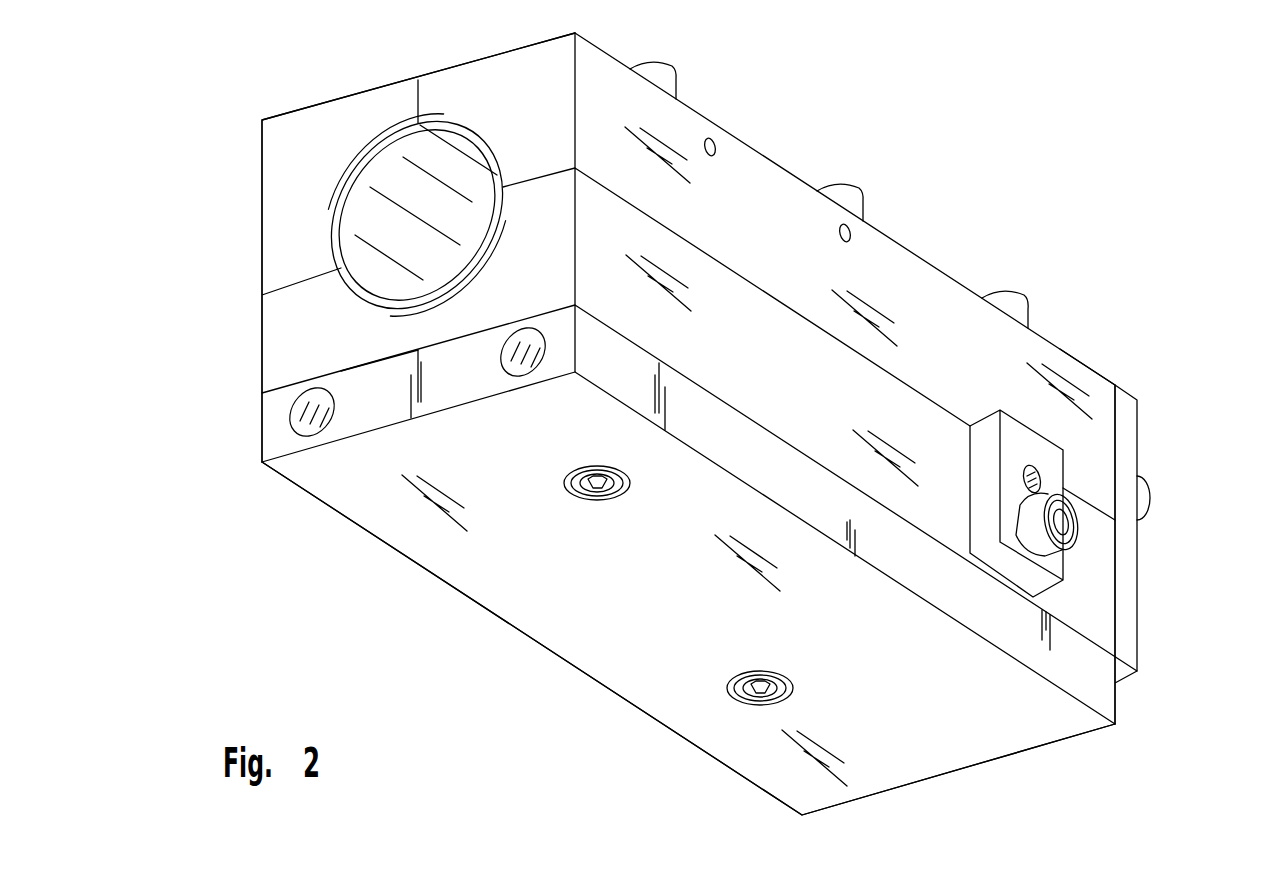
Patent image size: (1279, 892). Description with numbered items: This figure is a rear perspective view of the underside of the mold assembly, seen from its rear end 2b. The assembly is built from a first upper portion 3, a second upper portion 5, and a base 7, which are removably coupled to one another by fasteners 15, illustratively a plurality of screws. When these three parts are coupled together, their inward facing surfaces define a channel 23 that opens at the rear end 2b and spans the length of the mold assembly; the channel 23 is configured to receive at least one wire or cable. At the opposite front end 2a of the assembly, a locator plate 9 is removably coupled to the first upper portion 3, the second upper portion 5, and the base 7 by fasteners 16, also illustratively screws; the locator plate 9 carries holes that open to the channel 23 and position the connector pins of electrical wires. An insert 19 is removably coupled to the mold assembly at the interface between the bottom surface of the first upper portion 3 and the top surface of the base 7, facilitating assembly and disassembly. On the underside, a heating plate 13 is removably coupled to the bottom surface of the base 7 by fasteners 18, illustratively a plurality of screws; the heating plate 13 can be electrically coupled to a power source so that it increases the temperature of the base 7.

The first upper portion 3 is at (490, 75).
The second upper portion 5 is at (283, 152).
The channel 23 is at (352, 208).
The base 7 is at (282, 343).
The rear end 2b is at (370, 386).
The fastener 15 is at (836, 190).
The front end 2a is at (1110, 370).
The locator plate 9 is at (1121, 392).
The insert 19 is at (1058, 460).
The fastener 16 is at (1150, 502).
The heating plate 13 is at (1102, 690).
The fastener 18 is at (743, 703).